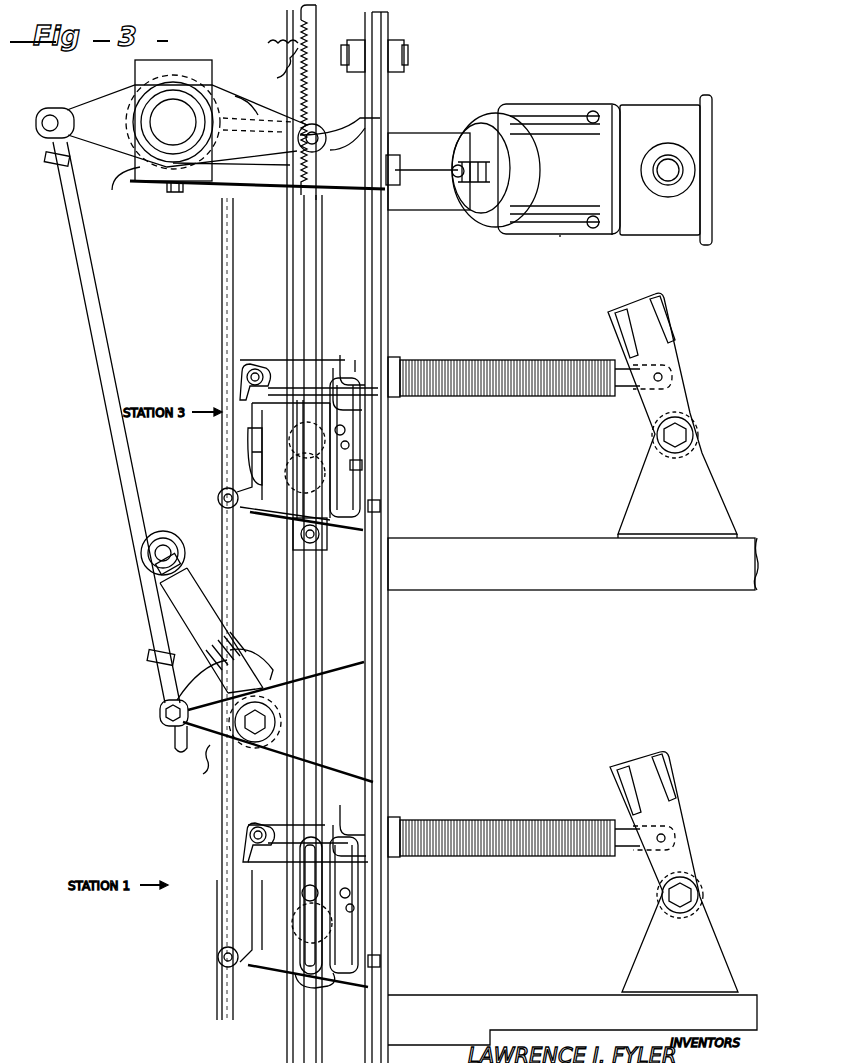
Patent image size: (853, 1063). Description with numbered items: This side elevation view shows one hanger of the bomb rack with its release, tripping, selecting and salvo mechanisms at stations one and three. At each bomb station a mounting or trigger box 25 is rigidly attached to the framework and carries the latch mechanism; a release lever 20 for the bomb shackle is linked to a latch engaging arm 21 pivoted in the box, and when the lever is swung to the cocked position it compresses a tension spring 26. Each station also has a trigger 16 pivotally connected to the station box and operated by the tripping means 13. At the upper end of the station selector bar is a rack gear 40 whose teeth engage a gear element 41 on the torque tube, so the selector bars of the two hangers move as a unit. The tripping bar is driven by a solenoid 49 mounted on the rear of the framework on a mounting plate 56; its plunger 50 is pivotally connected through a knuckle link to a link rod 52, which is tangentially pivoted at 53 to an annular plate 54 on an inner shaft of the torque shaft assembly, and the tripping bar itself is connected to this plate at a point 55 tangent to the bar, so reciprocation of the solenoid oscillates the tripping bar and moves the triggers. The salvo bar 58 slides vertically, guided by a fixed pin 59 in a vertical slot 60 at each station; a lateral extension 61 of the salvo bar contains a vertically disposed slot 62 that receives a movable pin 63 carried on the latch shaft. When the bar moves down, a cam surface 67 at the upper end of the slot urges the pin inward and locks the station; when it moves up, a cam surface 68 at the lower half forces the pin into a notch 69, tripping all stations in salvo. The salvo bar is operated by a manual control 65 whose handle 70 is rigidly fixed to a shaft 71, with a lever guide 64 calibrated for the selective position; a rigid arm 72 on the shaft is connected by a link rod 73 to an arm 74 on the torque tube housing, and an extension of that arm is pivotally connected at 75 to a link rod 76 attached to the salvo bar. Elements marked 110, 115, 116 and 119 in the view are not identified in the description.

The tripping means 13 is at (215, 862).
The trigger 16 is at (236, 508).
The release lever 20 is at (683, 403).
The latch engaging arm 21 is at (240, 392).
The mounting or trigger box 25 is at (250, 433).
The tension spring 26 is at (556, 362).
The rack gear 40 is at (300, 12).
The gear element 41 is at (266, 47).
The solenoid 49 is at (545, 115).
The plunger 50 is at (456, 162).
The link rod 52 is at (268, 190).
The tangential pivotal connection 53 is at (175, 192).
The annular plate 54 is at (126, 185).
The connection point 55 is at (298, 136).
The mounting plate 56 is at (565, 235).
The salvo bar 58 is at (300, 795).
The fixed pin 59 is at (262, 453).
The vertical slot 60 is at (255, 470).
The lateral extension 61 is at (362, 486).
The vertically disposed slot 62 is at (347, 430).
The movable pin 63 is at (350, 446).
The lever guide 64 is at (166, 732).
The manual control 65 is at (200, 565).
The cam surface 67 is at (362, 426).
The cam surface 68 is at (362, 468).
The notch 69 is at (380, 513).
The handle 70 is at (193, 623).
The shaft 71 is at (265, 725).
The rigid arm 72 is at (191, 760).
The link rod 73 is at (104, 358).
The arm 74 is at (112, 100).
The pivotal connection 75 is at (370, 120).
The link rod 76 is at (312, 268).
The mounting plate 110 is at (386, 268).
The channel member 115 is at (224, 267).
The lower pivot lug 116 is at (232, 966).
The stop 119 is at (354, 588).